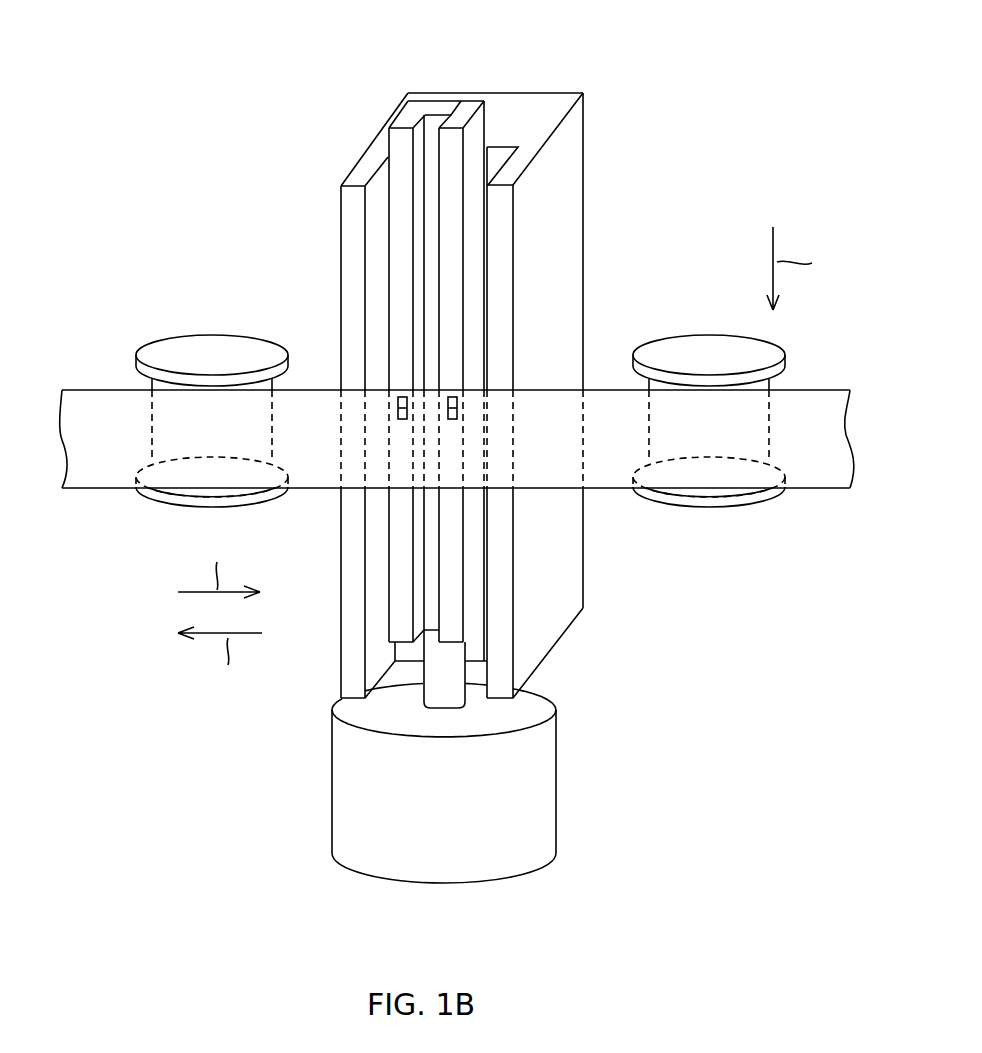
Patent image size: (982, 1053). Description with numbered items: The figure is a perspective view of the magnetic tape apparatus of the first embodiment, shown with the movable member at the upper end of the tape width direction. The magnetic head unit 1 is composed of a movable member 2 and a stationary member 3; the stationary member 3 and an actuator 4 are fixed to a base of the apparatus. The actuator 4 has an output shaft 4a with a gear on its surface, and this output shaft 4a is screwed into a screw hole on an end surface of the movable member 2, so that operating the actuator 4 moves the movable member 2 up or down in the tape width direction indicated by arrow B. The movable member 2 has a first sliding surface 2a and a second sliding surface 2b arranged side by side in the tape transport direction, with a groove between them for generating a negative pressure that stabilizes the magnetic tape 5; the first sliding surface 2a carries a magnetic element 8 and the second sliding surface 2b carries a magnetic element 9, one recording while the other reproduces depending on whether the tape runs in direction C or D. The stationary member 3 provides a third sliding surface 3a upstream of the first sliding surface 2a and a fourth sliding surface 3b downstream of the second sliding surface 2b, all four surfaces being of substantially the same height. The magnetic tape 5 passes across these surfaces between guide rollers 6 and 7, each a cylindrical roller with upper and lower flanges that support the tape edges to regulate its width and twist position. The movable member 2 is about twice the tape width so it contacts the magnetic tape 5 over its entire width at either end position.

The magnetic head unit 1 is at (322, 104).
The movable member 2 is at (439, 108).
The first sliding surface 2a is at (400, 240).
The second sliding surface 2b is at (455, 240).
The stationary member 3 is at (520, 127).
The third sliding surface 3a is at (352, 290).
The fourth sliding surface 3b is at (500, 290).
The actuator 4 is at (542, 788).
The output shaft 4a is at (438, 673).
The magnetic tape 5 is at (92, 408).
The guide roller 6 is at (212, 347).
The guide roller 7 is at (710, 347).
The magnetic element 8 is at (398, 402).
The magnetic element 9 is at (457, 402).